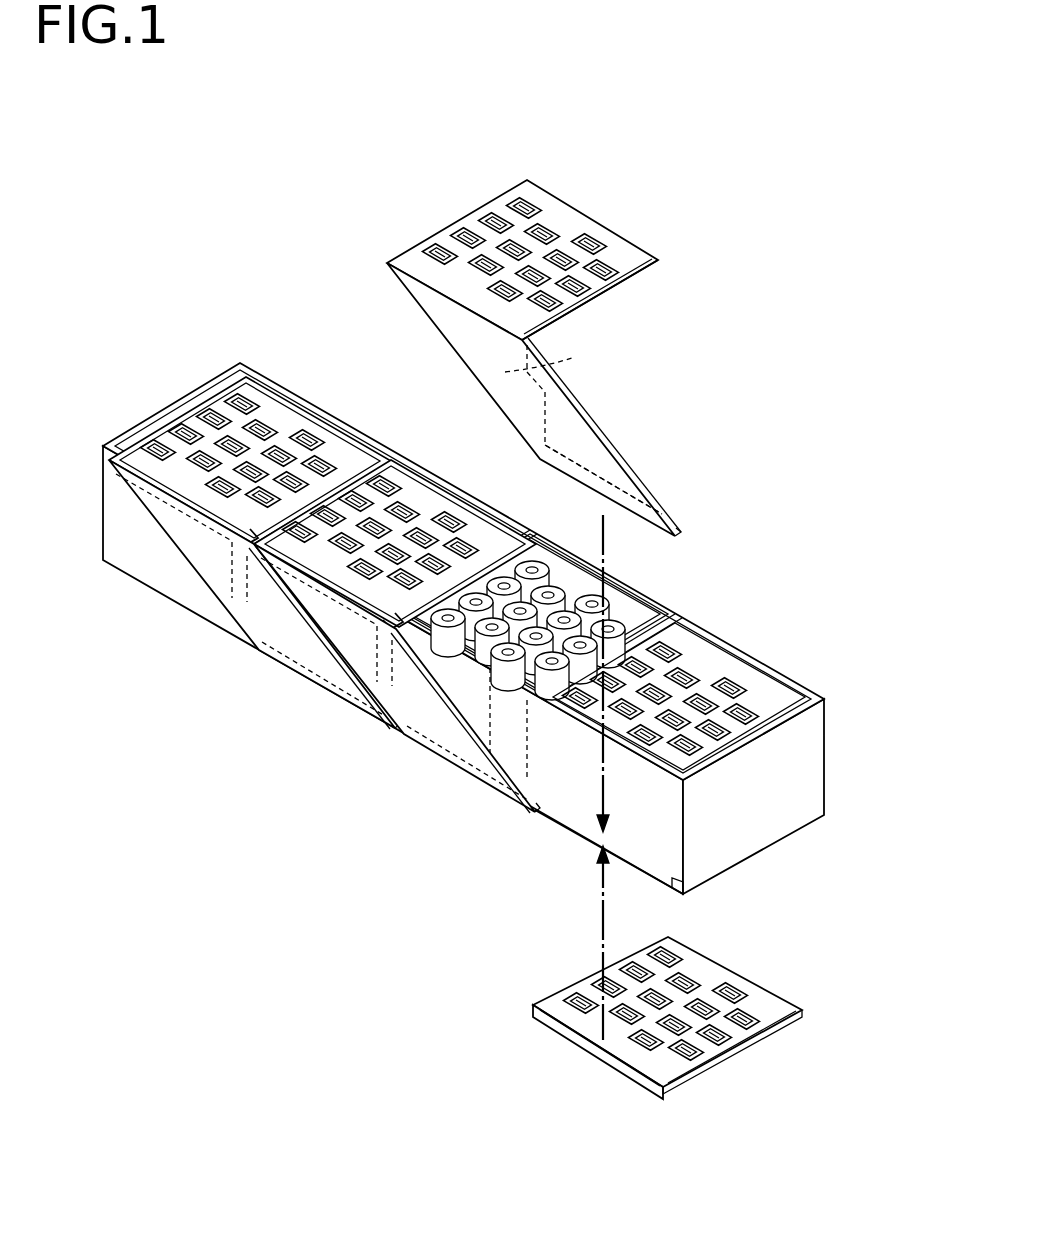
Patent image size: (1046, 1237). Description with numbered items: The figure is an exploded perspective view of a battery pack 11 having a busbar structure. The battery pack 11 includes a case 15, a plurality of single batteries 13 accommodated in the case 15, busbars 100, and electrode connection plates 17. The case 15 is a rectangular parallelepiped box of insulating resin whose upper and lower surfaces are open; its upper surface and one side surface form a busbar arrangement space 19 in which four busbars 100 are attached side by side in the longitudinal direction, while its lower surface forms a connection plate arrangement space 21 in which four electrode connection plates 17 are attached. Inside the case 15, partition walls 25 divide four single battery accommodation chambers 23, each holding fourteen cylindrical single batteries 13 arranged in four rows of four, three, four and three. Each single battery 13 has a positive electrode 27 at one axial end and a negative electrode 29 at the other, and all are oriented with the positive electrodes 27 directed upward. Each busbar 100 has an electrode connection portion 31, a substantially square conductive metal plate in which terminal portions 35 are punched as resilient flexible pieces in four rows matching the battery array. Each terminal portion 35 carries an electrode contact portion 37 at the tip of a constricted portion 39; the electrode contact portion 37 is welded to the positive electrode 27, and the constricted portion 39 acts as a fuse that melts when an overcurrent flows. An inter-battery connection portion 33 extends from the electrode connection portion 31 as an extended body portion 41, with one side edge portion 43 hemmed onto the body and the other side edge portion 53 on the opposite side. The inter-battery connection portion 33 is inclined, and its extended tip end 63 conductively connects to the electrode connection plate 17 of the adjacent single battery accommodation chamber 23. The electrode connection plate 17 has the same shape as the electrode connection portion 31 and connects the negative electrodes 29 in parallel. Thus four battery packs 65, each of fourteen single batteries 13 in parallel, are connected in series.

The battery pack 11 is at (244, 178).
The single battery 13 is at (485, 680).
The case 15 is at (795, 813).
The electrode connection plate 17 is at (722, 963).
The busbar arrangement space 19 is at (392, 603).
The connection plate arrangement space 21 is at (580, 837).
The single battery accommodation chamber 23 is at (625, 612).
The partition wall 25 is at (360, 463).
The positive electrode 27 is at (519, 628).
The negative electrode 29 is at (490, 798).
The electrode connection portion 31 is at (288, 415).
The inter-battery connection portion 33 is at (195, 550).
The terminal portion 35 is at (220, 478).
The electrode contact portion 37 is at (612, 283).
The constricted portion 39 is at (638, 288).
The extended body portion 41 is at (425, 300).
The one side edge portion 43 is at (540, 362).
The other side edge portion 53 is at (606, 455).
The extended tip end 63 is at (682, 530).
The battery pack 65 is at (552, 548).
The busbar 100 is at (272, 386).